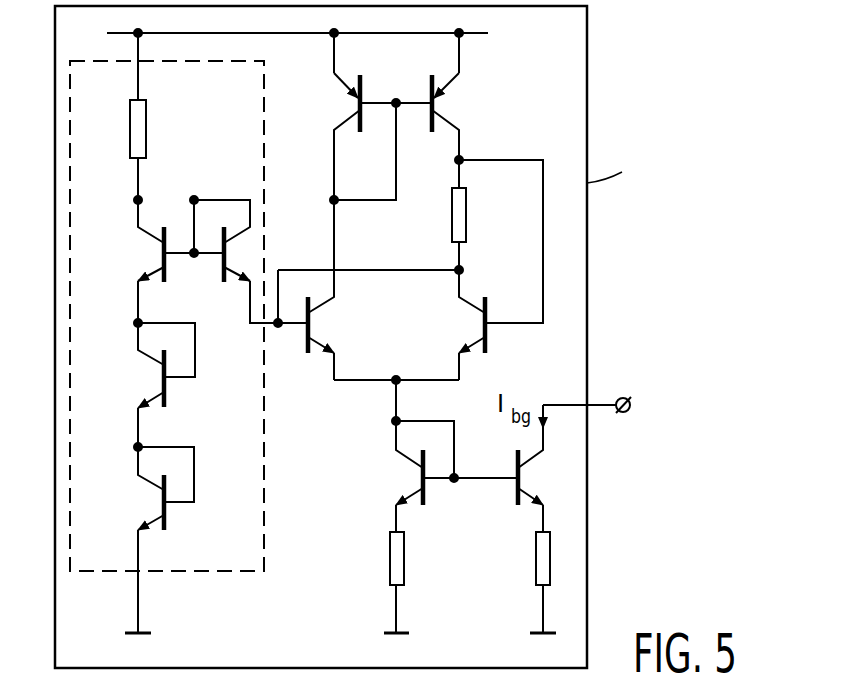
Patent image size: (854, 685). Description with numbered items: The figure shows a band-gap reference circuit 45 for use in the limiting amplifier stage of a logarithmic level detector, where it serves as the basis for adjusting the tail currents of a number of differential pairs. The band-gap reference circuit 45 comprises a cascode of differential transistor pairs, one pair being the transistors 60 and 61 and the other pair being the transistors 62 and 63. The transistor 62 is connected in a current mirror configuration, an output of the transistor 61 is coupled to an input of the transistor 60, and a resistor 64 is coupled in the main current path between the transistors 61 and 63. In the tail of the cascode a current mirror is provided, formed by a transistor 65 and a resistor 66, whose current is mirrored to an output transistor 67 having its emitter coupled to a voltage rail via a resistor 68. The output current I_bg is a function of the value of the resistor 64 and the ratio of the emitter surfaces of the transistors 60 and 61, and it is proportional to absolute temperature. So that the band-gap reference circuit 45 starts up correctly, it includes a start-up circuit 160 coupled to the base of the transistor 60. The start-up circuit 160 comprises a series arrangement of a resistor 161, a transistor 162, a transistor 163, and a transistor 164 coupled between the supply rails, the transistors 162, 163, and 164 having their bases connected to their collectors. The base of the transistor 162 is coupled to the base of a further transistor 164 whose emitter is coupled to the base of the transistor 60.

The band-gap reference circuit 45 is at (587, 88).
The transistor 60 is at (325, 325).
The transistor 61 is at (462, 326).
The transistor 62 is at (340, 100).
The transistor 63 is at (452, 103).
The resistor 64 is at (466, 213).
The transistor 65 is at (406, 476).
The resistor 66 is at (390, 560).
The output transistor 67 is at (512, 496).
The resistor 68 is at (536, 558).
The start-up circuit 160 is at (264, 452).
The resistor 161 is at (146, 130).
The transistor 162 is at (145, 253).
The transistor 163 is at (168, 393).
The transistor 164 is at (236, 273).